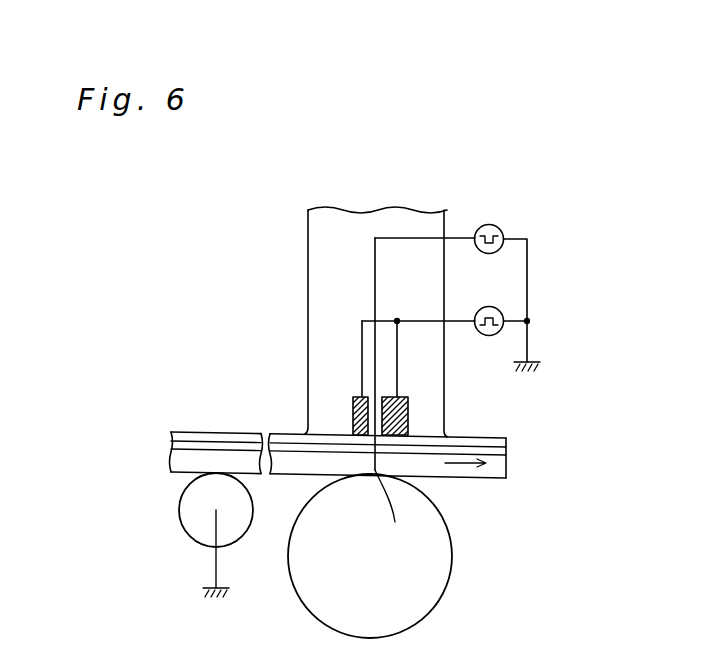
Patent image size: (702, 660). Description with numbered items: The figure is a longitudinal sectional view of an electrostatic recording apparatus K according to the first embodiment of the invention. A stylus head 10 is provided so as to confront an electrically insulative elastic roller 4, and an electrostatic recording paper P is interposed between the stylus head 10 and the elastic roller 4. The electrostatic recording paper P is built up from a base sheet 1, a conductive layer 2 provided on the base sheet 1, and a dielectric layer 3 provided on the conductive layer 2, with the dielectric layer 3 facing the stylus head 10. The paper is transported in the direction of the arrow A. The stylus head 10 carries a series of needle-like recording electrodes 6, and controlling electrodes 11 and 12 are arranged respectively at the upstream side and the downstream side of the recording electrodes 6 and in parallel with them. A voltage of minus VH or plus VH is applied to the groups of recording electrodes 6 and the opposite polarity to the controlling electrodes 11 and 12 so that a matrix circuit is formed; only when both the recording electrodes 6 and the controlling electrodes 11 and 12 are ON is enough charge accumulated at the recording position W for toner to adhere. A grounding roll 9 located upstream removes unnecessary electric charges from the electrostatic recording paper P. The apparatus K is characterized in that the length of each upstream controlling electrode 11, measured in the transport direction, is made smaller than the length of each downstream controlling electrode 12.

The base sheet 1 is at (493, 468).
The conductive layer 2 is at (500, 452).
The dielectric layer 3 is at (483, 440).
The elastic roller 4 is at (435, 588).
The recording electrodes 6 is at (375, 361).
The grounding roll 9 is at (179, 518).
The stylus head 10 is at (305, 305).
The controlling electrodes 11 is at (353, 413).
The controlling electrodes 12 is at (408, 408).
The electrostatic recording apparatus K is at (503, 192).
The electrostatic recording paper P is at (384, 466).
The transport direction arrow A is at (473, 481).
The recording position W is at (391, 512).